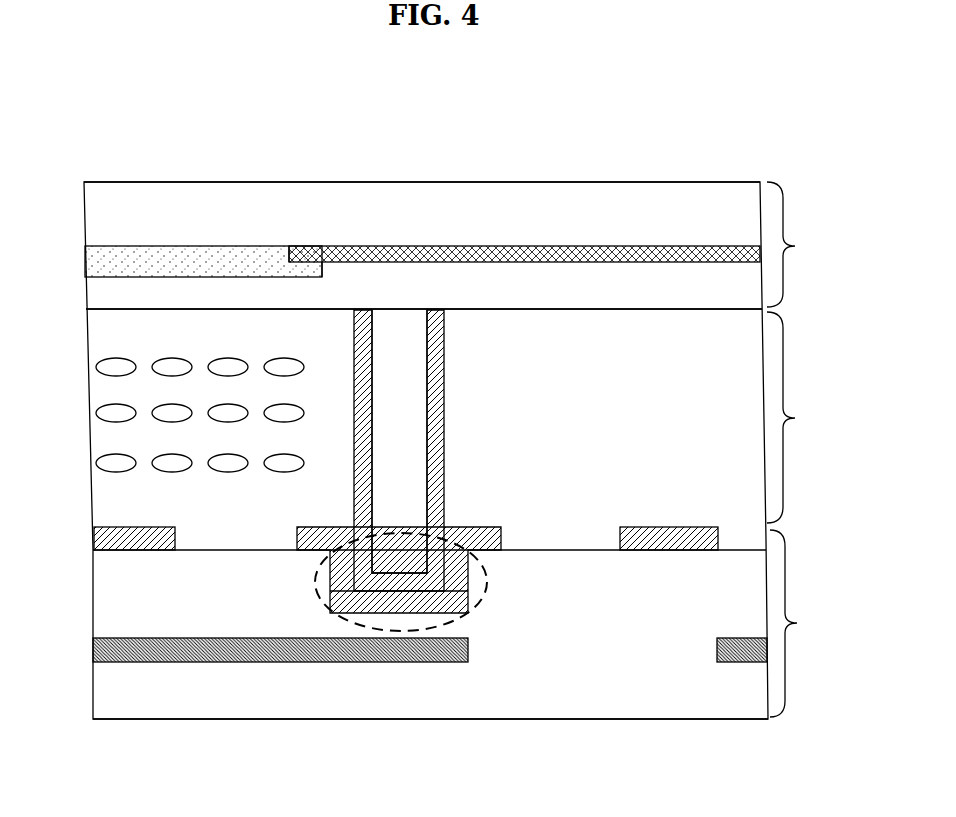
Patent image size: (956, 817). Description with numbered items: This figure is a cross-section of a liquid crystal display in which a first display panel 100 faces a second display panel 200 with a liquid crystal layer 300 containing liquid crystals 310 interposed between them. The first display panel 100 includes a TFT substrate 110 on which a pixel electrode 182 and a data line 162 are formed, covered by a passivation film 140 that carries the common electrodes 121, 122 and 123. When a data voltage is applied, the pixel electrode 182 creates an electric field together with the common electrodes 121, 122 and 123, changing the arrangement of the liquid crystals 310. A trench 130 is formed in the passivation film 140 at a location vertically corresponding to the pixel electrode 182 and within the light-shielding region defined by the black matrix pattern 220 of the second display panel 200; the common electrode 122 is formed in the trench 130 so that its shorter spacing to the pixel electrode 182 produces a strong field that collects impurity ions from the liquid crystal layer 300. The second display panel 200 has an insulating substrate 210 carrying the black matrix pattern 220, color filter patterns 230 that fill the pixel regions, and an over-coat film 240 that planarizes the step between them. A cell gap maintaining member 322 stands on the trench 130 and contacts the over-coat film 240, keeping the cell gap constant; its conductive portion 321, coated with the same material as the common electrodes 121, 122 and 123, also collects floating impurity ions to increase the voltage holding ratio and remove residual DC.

The first display panel 100 is at (803, 623).
The TFT substrate 110 is at (103, 687).
The common electrode 121 is at (105, 527).
The common electrode 122 is at (458, 533).
The common electrode 123 is at (640, 527).
The trench 130 is at (311, 588).
The passivation film 140 is at (110, 622).
The data line 162 is at (733, 657).
The pixel electrode 182 is at (98, 650).
The second display panel 200 is at (801, 244).
The insulating substrate 210 is at (718, 197).
The black matrix pattern 220 is at (362, 252).
The color filter pattern 230 is at (225, 253).
The over-coat film 240 is at (523, 287).
The liquid crystal layer 300 is at (801, 417).
The liquid crystals 310 is at (110, 412).
The conductive portion 321 is at (445, 448).
The cell gap maintaining member 322 is at (418, 390).